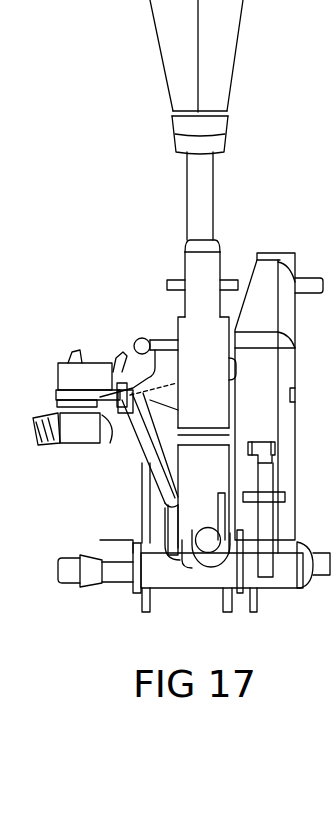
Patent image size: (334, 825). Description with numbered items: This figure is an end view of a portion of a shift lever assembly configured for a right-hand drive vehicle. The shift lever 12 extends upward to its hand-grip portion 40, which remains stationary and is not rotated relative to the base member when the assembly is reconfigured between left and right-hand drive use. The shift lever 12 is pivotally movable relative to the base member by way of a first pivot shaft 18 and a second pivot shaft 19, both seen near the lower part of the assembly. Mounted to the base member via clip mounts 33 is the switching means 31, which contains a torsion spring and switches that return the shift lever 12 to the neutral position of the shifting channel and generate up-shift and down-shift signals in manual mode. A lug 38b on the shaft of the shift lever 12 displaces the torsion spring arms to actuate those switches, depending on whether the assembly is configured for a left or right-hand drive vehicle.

The hand-grip portion 40 is at (220, 57).
The shift lever 12 is at (201, 191).
The lug 38b is at (141, 338).
The switching means 31 is at (30, 373).
The clip mounts 33 is at (102, 447).
The first pivot shaft 18 is at (115, 572).
The second pivot shaft 19 is at (203, 550).